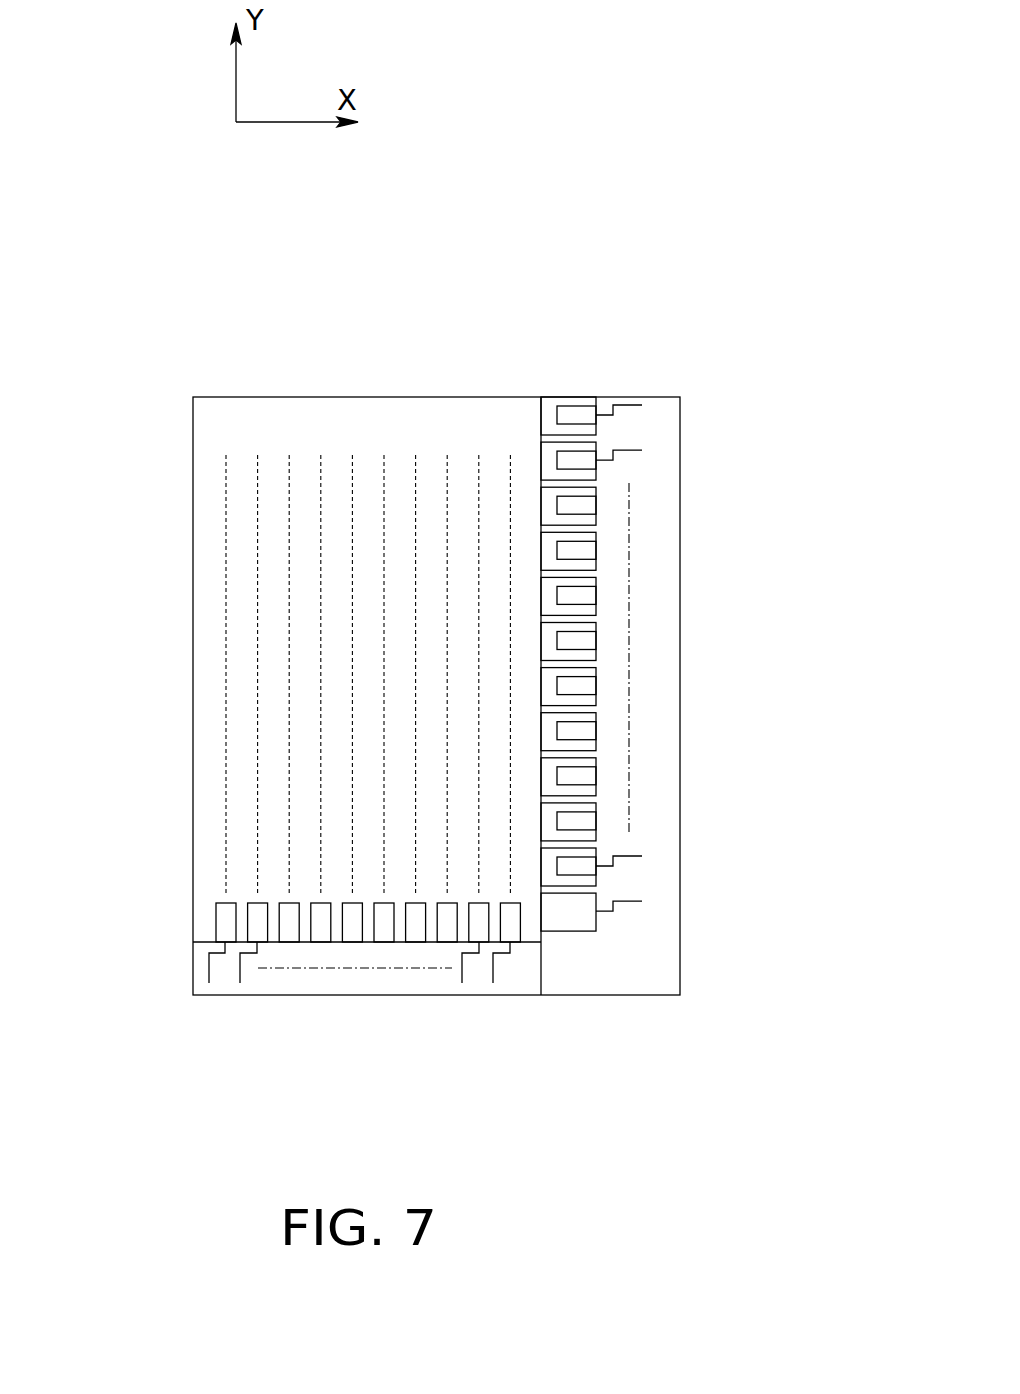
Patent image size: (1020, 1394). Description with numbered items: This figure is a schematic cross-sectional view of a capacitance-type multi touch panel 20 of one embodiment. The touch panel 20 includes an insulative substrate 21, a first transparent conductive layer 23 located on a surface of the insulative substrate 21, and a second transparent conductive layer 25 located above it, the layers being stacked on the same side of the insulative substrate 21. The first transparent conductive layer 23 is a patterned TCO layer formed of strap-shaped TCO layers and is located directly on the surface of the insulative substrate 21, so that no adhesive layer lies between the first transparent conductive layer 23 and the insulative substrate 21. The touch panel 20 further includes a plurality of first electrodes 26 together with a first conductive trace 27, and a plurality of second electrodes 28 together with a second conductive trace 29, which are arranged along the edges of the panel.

The capacitance-type multi touch panel 20 is at (334, 249).
The insulative substrate 21 is at (668, 638).
The first transparent conductive layer 23 is at (549, 407).
The second transparent conductive layer 25 is at (207, 437).
The first electrodes 26 is at (572, 412).
The first conductive trace 27 is at (628, 404).
The second electrodes 28 is at (220, 920).
The second conductive trace 29 is at (207, 967).